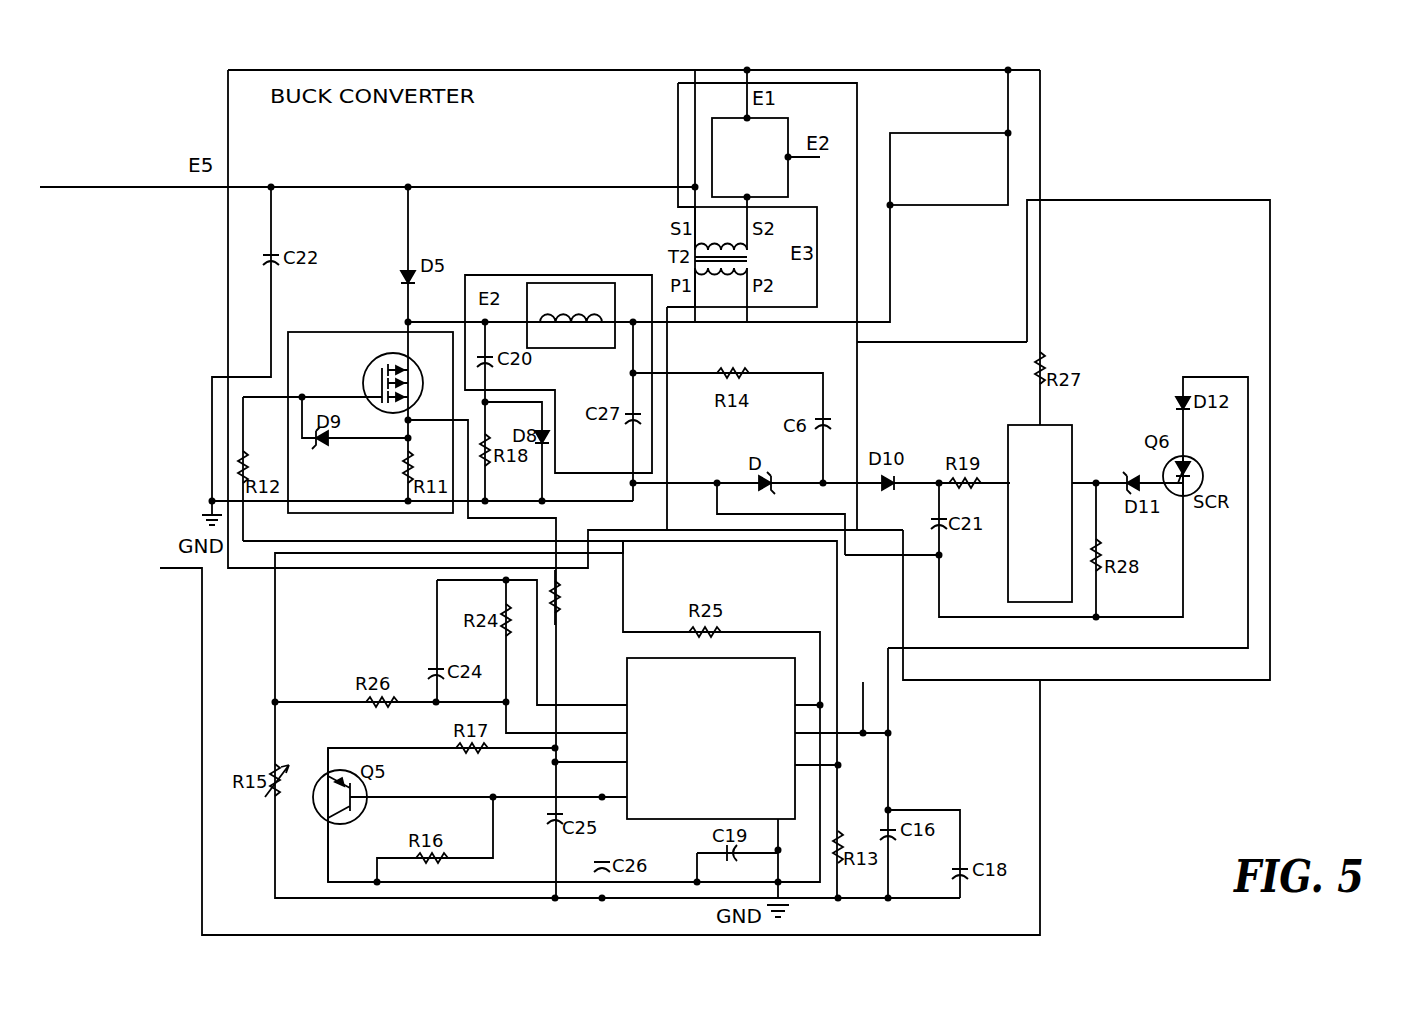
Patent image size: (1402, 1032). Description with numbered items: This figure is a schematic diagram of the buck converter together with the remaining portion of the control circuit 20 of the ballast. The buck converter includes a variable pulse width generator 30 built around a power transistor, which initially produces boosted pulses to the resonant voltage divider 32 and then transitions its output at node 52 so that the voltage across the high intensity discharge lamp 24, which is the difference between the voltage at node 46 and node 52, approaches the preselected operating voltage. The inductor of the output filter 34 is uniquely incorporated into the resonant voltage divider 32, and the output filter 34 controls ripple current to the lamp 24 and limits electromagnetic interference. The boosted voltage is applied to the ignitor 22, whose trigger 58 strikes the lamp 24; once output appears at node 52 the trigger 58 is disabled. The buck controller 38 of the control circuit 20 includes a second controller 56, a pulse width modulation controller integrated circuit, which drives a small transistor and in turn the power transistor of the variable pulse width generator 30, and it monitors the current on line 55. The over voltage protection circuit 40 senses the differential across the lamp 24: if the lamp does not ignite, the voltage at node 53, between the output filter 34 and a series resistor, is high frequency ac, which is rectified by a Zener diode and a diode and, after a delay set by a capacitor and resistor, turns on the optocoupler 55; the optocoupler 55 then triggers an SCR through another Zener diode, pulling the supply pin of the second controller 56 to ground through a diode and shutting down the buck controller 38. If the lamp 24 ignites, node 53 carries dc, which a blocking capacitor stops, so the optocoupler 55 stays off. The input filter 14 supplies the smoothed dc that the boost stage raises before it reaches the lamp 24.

The input filter 14 is at (570, 597).
The control circuit 20 is at (1038, 800).
The ignitor 22 is at (767, 306).
The high intensity discharge lamp 24 is at (950, 170).
The variable pulse width generator 30 is at (370, 422).
The resonant voltage divider 32 is at (558, 374).
The output filter 34 is at (571, 315).
The buck controller 38 is at (576, 719).
The over voltage protection circuit 40 is at (1086, 440).
The node 46 is at (271, 190).
The node 52 is at (408, 322).
The node 53 is at (633, 373).
The optocoupler 55 is at (1072, 455).
The second controller 56 is at (711, 738).
The trigger 58 is at (790, 184).